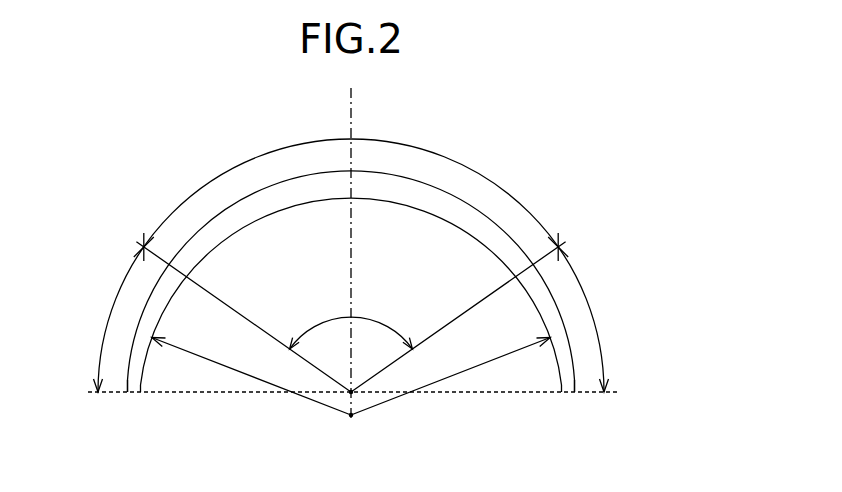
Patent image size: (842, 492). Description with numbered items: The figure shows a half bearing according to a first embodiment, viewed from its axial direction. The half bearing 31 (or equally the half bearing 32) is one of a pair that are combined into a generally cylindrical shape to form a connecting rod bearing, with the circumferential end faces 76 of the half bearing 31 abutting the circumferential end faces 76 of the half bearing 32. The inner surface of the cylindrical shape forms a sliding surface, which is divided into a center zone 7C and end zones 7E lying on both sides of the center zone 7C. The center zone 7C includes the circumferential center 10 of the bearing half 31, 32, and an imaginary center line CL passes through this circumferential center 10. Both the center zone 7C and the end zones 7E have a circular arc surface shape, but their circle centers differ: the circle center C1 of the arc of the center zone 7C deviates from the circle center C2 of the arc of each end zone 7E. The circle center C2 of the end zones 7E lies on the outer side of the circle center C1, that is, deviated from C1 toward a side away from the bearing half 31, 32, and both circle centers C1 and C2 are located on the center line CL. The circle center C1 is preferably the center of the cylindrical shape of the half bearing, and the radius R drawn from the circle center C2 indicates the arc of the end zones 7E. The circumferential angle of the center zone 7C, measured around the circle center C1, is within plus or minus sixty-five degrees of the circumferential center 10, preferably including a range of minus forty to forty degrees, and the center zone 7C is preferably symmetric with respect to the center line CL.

The circumferential center 10 is at (350, 141).
The imaginary center line CL is at (352, 160).
The half bearing 31 is at (346, 263).
The half bearing 32 is at (200, 226).
The center zone 7C is at (351, 263).
The end zones 7E is at (347, 312).
The circumferential end faces 76 is at (128, 393).
The circle center of center zone C1 is at (350, 398).
The circle center of end zones C2 is at (352, 417).
The radius of curvature R is at (351, 377).